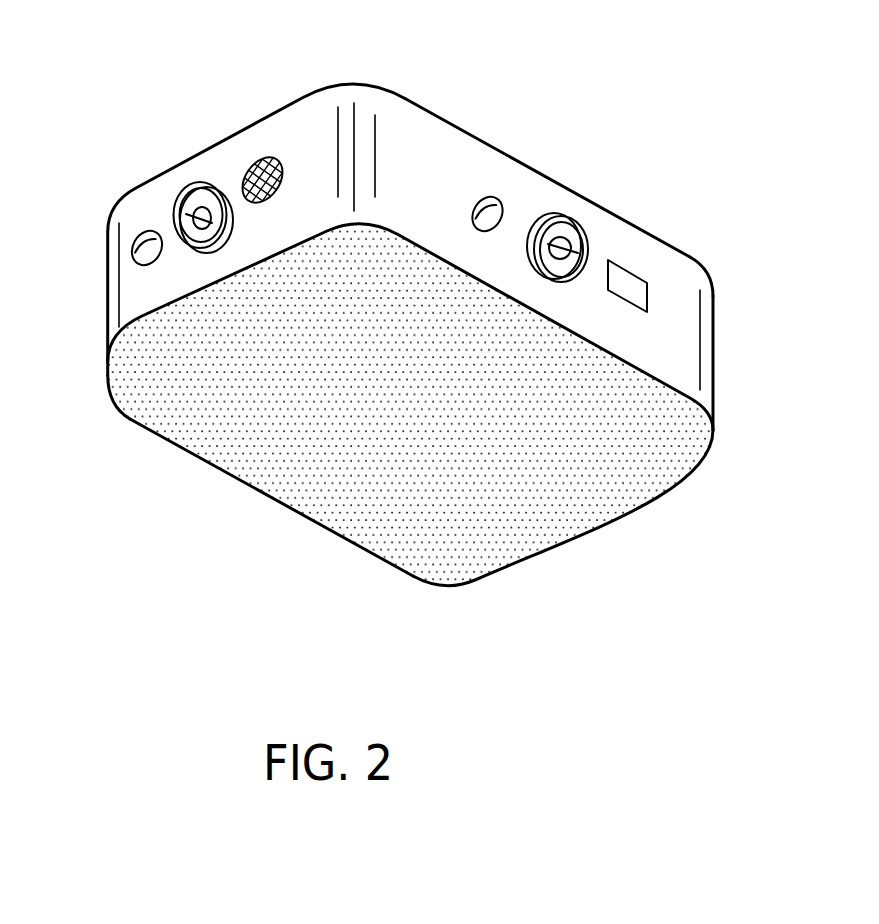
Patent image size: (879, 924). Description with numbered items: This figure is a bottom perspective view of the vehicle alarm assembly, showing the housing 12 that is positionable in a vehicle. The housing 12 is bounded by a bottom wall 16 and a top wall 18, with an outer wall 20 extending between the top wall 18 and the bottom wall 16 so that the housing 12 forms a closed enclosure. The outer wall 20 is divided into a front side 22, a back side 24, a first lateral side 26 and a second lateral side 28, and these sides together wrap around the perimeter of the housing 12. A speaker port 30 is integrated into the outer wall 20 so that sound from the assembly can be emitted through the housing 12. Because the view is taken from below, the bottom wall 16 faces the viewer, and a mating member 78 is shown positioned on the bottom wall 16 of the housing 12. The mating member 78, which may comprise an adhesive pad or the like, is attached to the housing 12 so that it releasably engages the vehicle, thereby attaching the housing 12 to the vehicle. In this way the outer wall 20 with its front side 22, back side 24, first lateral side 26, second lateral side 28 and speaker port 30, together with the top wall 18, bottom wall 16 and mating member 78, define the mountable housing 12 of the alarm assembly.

The housing 12 is at (153, 176).
The bottom wall 16 is at (652, 380).
The top wall 18 is at (528, 163).
The outer wall 20 is at (600, 237).
The front side 22 is at (263, 493).
The back side 24 is at (445, 160).
The first lateral side 26 is at (710, 353).
The second lateral side 28 is at (240, 155).
The speaker port 30 is at (645, 283).
The mating member 78 is at (578, 497).